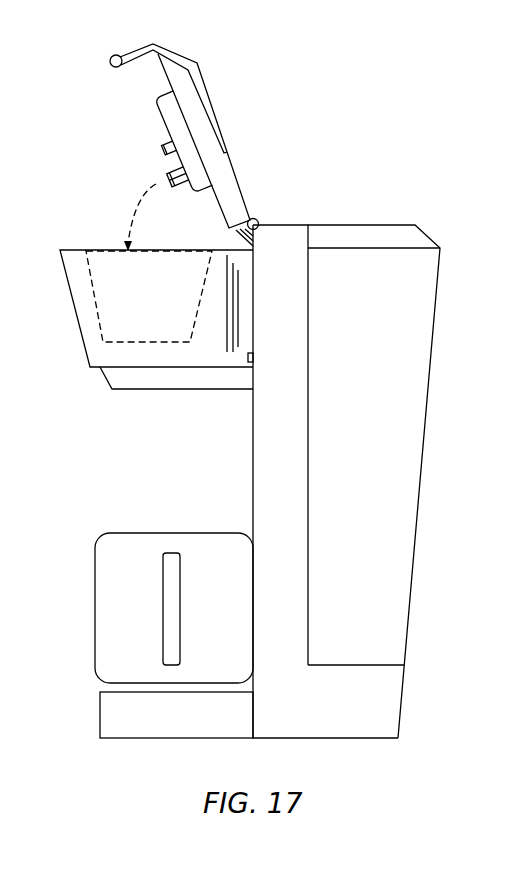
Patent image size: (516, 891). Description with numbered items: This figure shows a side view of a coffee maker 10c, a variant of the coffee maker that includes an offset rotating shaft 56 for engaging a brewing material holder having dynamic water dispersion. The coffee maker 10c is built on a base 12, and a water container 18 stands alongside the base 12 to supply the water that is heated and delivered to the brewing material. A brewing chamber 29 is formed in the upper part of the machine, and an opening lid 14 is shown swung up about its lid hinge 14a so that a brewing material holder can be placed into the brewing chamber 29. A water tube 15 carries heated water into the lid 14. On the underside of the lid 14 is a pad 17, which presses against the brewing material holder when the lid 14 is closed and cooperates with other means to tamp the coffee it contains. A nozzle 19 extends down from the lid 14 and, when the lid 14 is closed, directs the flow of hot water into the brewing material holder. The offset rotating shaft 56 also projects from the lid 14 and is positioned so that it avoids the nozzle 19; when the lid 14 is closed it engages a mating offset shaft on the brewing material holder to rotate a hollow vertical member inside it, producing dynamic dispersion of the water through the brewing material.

The coffee maker 10c is at (378, 163).
The base 12 is at (292, 339).
The opening lid 14 is at (227, 177).
The lid hinge 14a is at (255, 219).
The water tube 15 is at (256, 237).
The pad 17 is at (166, 113).
The water container 18 is at (367, 397).
The nozzle 19 is at (160, 145).
The brewing chamber 29 is at (145, 298).
The offset rotating shaft 56 is at (164, 177).